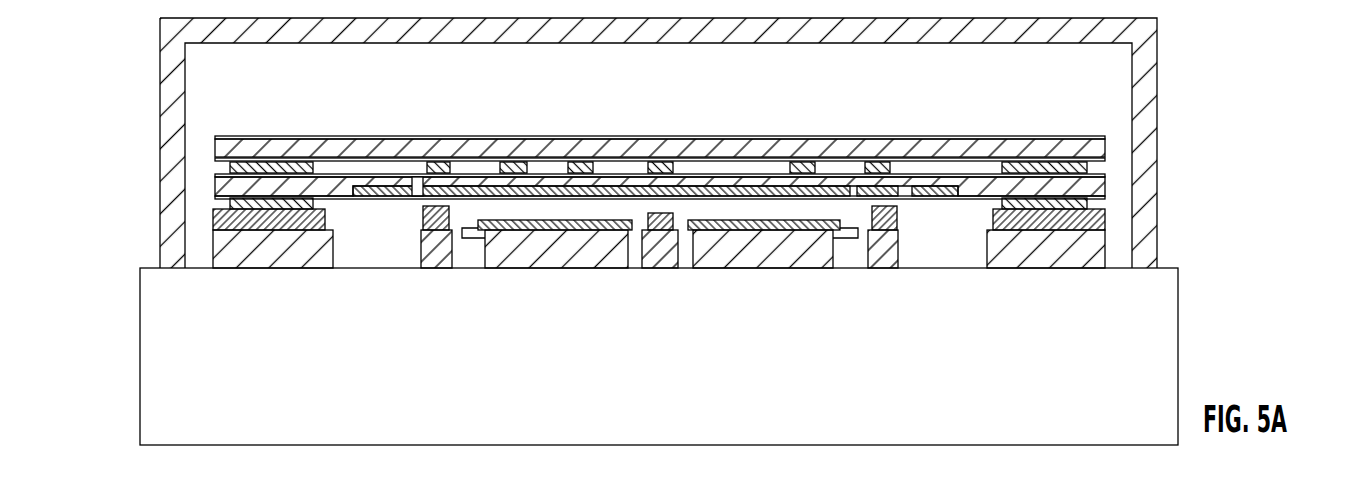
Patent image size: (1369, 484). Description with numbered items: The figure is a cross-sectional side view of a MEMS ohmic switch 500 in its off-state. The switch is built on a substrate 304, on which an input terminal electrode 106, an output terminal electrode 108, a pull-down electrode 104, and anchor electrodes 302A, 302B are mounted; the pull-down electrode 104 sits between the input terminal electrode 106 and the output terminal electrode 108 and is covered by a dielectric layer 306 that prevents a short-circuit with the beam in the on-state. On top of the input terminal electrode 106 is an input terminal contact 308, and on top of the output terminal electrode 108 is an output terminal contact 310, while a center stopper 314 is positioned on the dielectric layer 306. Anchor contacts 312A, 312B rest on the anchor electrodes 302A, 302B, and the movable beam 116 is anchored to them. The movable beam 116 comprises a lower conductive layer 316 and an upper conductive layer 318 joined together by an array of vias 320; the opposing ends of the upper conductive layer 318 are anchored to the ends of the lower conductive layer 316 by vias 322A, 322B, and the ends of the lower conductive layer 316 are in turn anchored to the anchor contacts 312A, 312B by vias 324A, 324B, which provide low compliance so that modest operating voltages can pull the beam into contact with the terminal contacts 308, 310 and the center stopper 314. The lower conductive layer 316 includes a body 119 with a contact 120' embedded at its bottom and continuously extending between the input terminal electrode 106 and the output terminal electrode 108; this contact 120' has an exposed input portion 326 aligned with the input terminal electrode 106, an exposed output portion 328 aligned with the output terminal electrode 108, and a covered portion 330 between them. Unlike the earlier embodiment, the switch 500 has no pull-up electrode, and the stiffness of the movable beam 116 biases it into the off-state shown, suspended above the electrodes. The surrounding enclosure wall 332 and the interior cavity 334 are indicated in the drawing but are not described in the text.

The MEMS switch 500 is at (1305, 128).
The substrate 304 is at (140, 395).
The lid / housing wall 332 is at (1158, 117).
The cavity 334 is at (1103, 77).
The movable beam 116 is at (348, 127).
The upper conductive layer 318 is at (427, 138).
The via 322A is at (285, 162).
The via 322B is at (1088, 167).
The array of vias 320 is at (877, 163).
The body 119 is at (983, 187).
The contact 120' is at (655, 262).
The lower conductive layer 316 is at (418, 188).
The covered portion 330 is at (708, 199).
The exposed input portion 326 is at (412, 210).
The exposed output portion 328 is at (911, 208).
The via 324A is at (246, 199).
The via 324B is at (1077, 203).
The anchor contact 312A is at (213, 222).
The anchor contact 312B is at (1105, 218).
The anchor electrode 302A is at (267, 270).
The anchor electrode 302B is at (1022, 268).
The input terminal electrode 106 is at (437, 268).
The input terminal contact 308 is at (433, 213).
The output terminal electrode 108 is at (893, 268).
The output terminal contact 310 is at (888, 213).
The center stopper 314 is at (663, 213).
The pull-down electrode 104 is at (570, 268).
The dielectric layer 306 is at (533, 227).